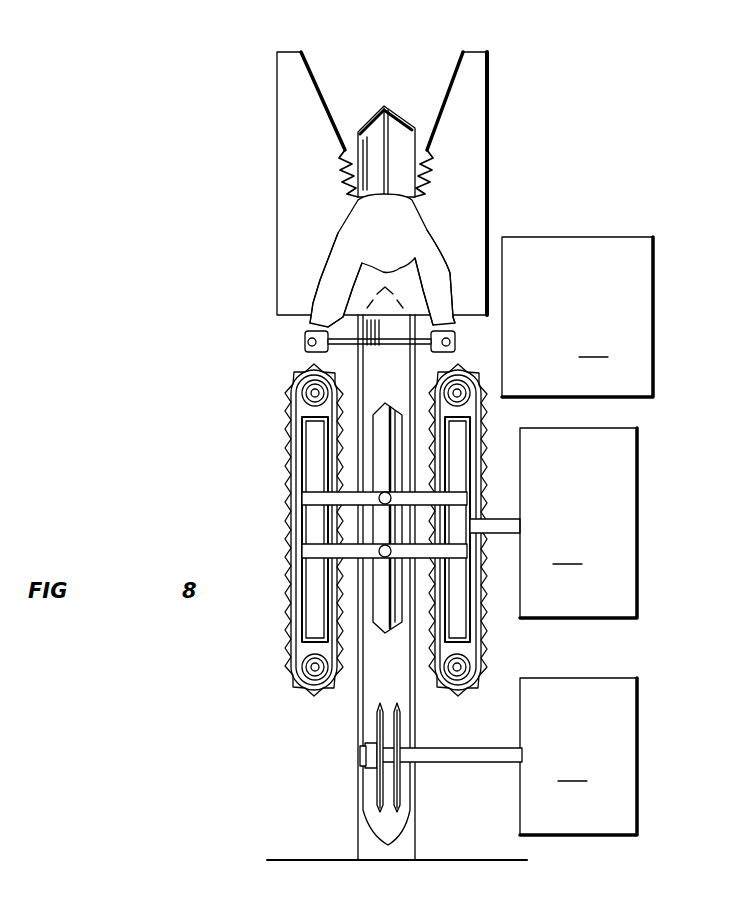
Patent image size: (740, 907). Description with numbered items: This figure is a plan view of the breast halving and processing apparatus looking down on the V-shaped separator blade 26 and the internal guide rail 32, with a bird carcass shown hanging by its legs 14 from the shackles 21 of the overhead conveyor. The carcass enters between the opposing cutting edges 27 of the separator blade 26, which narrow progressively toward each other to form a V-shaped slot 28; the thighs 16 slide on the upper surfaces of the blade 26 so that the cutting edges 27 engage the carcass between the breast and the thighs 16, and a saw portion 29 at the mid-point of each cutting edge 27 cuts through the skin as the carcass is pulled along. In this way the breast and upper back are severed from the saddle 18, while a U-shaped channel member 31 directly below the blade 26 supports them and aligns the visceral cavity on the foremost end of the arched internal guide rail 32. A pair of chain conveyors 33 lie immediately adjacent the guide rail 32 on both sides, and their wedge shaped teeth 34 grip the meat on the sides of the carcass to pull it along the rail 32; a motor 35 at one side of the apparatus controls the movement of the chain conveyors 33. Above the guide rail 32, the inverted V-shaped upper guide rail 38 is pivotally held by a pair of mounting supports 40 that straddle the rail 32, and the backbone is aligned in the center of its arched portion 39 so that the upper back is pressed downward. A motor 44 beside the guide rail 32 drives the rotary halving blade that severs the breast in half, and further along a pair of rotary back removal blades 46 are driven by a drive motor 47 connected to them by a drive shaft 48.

The legs 14 is at (308, 323).
The thighs 16 is at (327, 278).
The saddle 18 is at (425, 235).
The shackles 21 is at (305, 338).
The V-shaped separator blade 26 is at (277, 95).
The cutting edges 27 is at (445, 83).
The V-shaped slot 28 is at (404, 12).
The saw portion 29 is at (343, 173).
The U-shaped channel member 31 is at (413, 125).
The internal guide rail 32 is at (357, 358).
The chain conveyors 33 is at (278, 530).
The wedge shaped teeth 34 is at (282, 627).
The motor 35 is at (577, 317).
The upper guide rail 38 is at (314, 518).
The arched portion 39 is at (383, 447).
The mounting supports 40 is at (453, 553).
The motor 44 is at (553, 523).
The rotary back removal blades 46 is at (373, 782).
The drive motor 47 is at (578, 756).
The drive shaft 48 is at (463, 760).